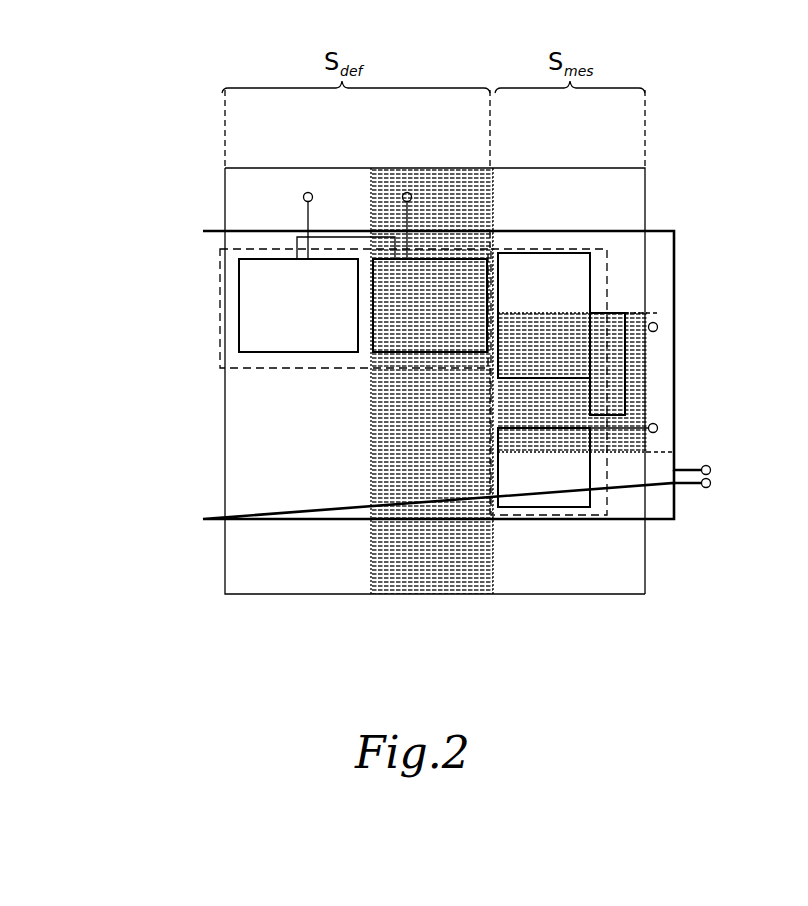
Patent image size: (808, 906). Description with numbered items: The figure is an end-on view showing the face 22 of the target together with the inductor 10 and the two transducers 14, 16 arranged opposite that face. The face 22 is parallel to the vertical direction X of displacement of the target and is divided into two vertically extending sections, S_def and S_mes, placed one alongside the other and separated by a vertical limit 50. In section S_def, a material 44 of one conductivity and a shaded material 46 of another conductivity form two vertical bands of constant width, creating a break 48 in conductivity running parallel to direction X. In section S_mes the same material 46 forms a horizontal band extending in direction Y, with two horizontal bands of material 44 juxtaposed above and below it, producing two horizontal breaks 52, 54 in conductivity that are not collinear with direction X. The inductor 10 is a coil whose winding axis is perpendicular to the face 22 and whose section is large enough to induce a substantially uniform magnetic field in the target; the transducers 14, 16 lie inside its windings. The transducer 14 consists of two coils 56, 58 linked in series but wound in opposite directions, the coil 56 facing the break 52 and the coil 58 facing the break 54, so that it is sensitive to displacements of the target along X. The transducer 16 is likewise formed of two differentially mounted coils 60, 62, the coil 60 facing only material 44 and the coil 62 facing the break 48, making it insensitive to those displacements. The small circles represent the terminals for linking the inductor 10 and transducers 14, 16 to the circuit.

The inductor 10 is at (662, 230).
The transducer 14 is at (607, 288).
The transducer 16 is at (220, 285).
The face 22 is at (610, 597).
The material 44 is at (247, 573).
The material 46 is at (453, 570).
The break in conductivity 48 is at (367, 568).
The vertical limit 50 is at (497, 545).
The break in conductivity 52 is at (661, 313).
The break in conductivity 54 is at (653, 452).
The coil 56 is at (545, 253).
The coil 58 is at (553, 508).
The coil 60 is at (255, 259).
The coil 62 is at (445, 258).